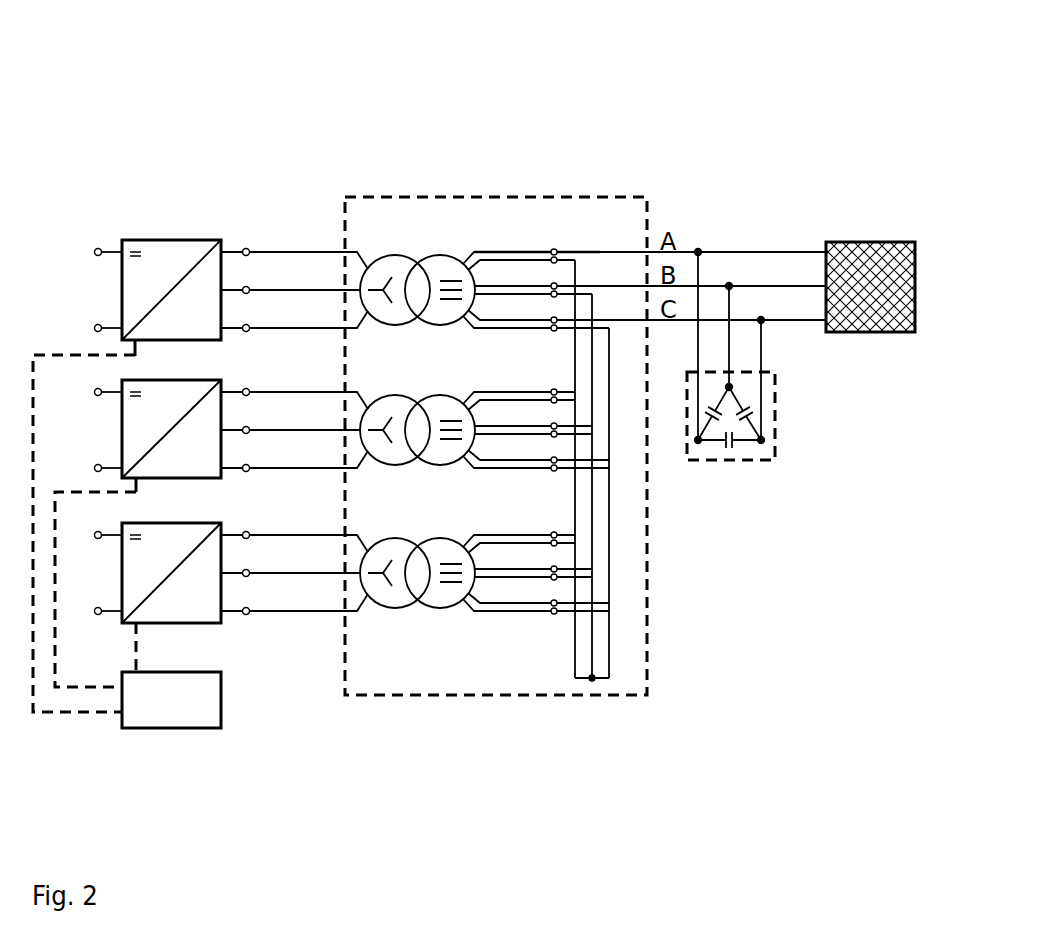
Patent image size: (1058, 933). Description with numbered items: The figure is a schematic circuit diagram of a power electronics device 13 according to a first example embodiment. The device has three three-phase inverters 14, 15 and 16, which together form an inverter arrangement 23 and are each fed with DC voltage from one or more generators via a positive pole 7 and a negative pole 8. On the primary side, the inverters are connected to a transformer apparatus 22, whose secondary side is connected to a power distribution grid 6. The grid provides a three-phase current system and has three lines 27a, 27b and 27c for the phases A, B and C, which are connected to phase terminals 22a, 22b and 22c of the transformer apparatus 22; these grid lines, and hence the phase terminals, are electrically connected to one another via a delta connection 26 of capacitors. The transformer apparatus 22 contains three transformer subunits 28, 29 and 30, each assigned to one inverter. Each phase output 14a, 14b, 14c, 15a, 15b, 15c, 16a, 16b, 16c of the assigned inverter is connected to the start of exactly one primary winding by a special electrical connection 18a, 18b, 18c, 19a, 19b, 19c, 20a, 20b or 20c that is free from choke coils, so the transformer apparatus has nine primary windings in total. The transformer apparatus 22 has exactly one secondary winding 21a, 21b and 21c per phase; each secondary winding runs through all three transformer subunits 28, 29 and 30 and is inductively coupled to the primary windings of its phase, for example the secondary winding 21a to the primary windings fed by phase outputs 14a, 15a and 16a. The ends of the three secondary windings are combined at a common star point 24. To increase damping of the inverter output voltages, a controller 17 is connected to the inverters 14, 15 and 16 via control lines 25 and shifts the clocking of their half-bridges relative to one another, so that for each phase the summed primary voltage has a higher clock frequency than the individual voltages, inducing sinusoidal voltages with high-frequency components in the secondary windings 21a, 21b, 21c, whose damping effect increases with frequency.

The power distribution grid 6 is at (865, 242).
The positive pole 7 is at (94, 250).
The negative pole 8 is at (94, 326).
The power electronics device 13 is at (748, 120).
The three-phase inverter 14 is at (171, 277).
The phase output 14a is at (222, 252).
The phase output 14b is at (222, 290).
The phase output 14c is at (222, 328).
The three-phase inverter 15 is at (158, 416).
The phase output 15a is at (222, 392).
The phase output 15b is at (222, 430).
The phase output 15c is at (222, 468).
The three-phase inverter 16 is at (158, 560).
The phase output 16a is at (222, 535).
The phase output 16b is at (222, 573).
The phase output 16c is at (222, 611).
The controller 17 is at (158, 730).
The special electrical connection 18a is at (325, 250).
The special electrical connection 18b is at (325, 288).
The special electrical connection 18c is at (325, 326).
The special electrical connection 19a is at (325, 390).
The special electrical connection 19b is at (325, 428).
The special electrical connection 19c is at (325, 466).
The special electrical connection 20a is at (325, 533).
The special electrical connection 20b is at (325, 571).
The special electrical connection 20c is at (325, 609).
The secondary winding 21a is at (510, 250).
The secondary winding 21b is at (592, 518).
The secondary winding 21c is at (609, 565).
The transformer apparatus 22 is at (458, 195).
The phase terminal 22a is at (554, 249).
The phase terminal 22b is at (556, 284).
The phase terminal 22c is at (552, 318).
The inverter arrangement 23 is at (108, 200).
The common star point 24 is at (591, 681).
The control lines 25 is at (43, 713).
The delta connection of capacitors 26 is at (775, 413).
The line 27a is at (787, 251).
The line 27b is at (765, 285).
The line 27c is at (793, 323).
The transformer subunit 28 is at (405, 257).
The transformer subunit 29 is at (405, 397).
The transformer subunit 30 is at (405, 540).